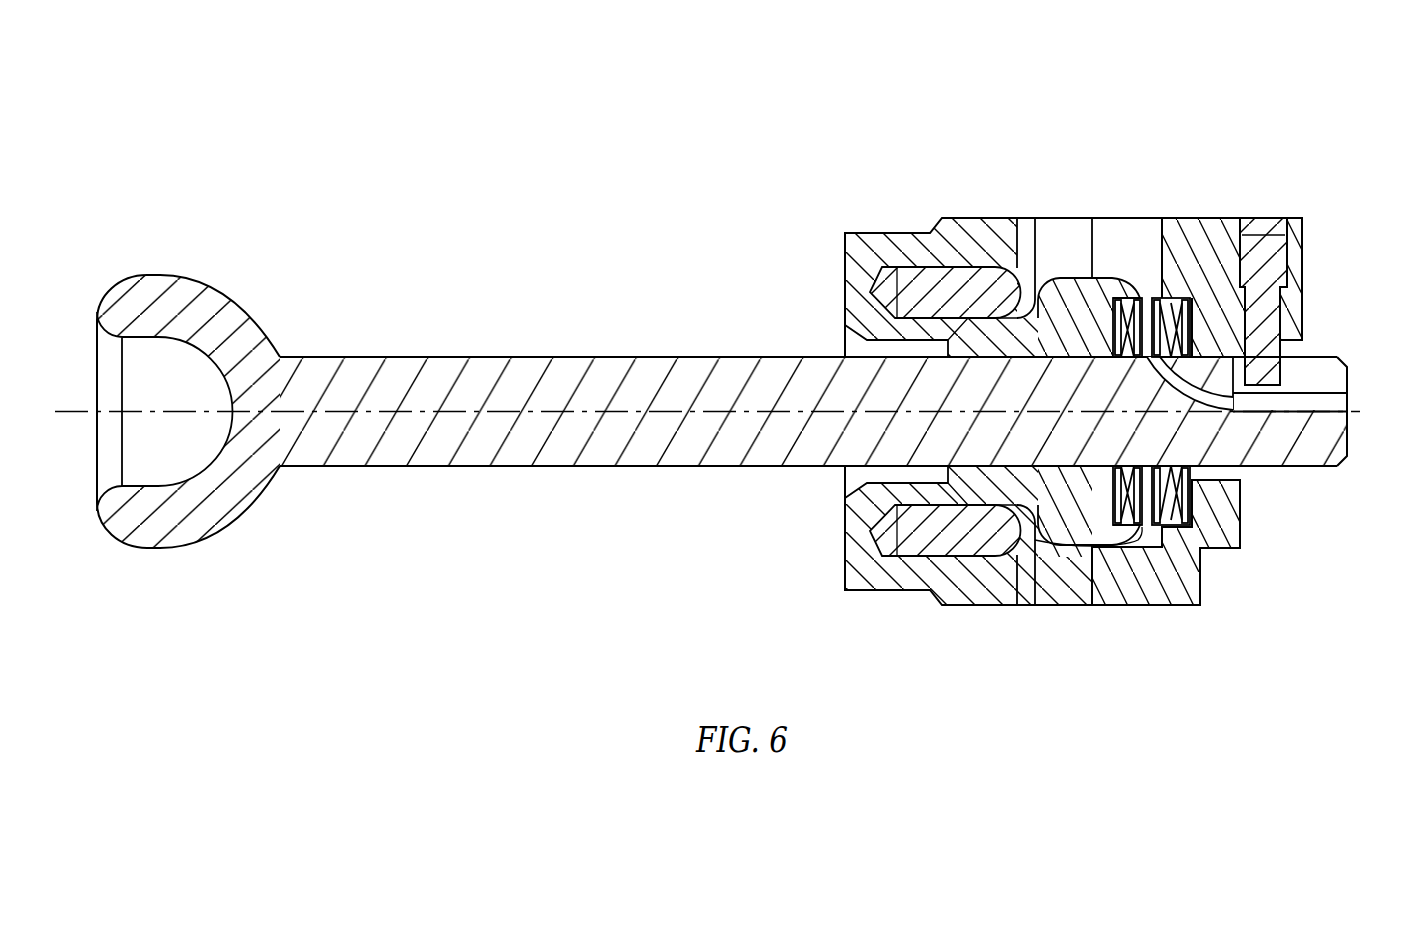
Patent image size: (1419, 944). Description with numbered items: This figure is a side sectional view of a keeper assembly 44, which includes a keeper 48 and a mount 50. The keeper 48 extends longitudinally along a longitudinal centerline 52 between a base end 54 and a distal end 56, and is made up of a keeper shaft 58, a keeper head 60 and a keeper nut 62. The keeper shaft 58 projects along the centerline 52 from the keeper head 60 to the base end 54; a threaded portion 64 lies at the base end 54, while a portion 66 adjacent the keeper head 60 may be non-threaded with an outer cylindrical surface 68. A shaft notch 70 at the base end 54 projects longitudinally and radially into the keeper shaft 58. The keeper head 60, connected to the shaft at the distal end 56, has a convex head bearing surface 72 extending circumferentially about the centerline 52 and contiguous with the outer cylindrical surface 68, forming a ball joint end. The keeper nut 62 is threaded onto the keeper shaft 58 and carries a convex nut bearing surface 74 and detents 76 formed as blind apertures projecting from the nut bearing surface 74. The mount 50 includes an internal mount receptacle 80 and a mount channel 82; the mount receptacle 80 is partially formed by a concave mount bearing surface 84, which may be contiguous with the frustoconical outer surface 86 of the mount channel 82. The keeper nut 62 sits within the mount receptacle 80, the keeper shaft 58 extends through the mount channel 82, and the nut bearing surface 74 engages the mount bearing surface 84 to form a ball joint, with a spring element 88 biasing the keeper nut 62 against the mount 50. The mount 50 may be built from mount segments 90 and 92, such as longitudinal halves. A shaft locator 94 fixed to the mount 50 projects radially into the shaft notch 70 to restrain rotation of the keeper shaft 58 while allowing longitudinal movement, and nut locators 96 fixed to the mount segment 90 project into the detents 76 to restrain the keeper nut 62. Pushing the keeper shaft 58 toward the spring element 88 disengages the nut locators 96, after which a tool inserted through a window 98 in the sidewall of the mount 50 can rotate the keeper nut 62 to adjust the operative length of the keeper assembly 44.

The keeper assembly 44 is at (201, 114).
The keeper 48 is at (624, 337).
The mount 50 is at (1219, 151).
The longitudinal centerline 52 is at (71, 410).
The base end 54 is at (1349, 440).
The distal end 56 is at (138, 488).
The keeper shaft 58 is at (575, 453).
The keeper head 60 is at (203, 518).
The keeper nut 62 is at (1093, 575).
The threaded portion 64 is at (726, 472).
The portion of the keeper shaft 66 is at (322, 480).
The outer cylindrical surface 68 is at (372, 356).
The shaft notch 70 is at (1324, 382).
The head bearing surface 72 is at (206, 275).
The nut bearing surface 74 is at (928, 506).
The detents 76 is at (1052, 300).
The mount receptacle 80 is at (1150, 540).
The mount channel 82 is at (844, 478).
The mount bearing surface 84 is at (975, 320).
The outer surface 86 is at (893, 480).
The spring element 88 is at (1180, 492).
The mount segment 90 is at (831, 241).
The mount segment 92 is at (1307, 246).
The shaft locator 94 is at (1262, 234).
The nut locators 96 is at (890, 292).
The window 98 is at (1128, 215).